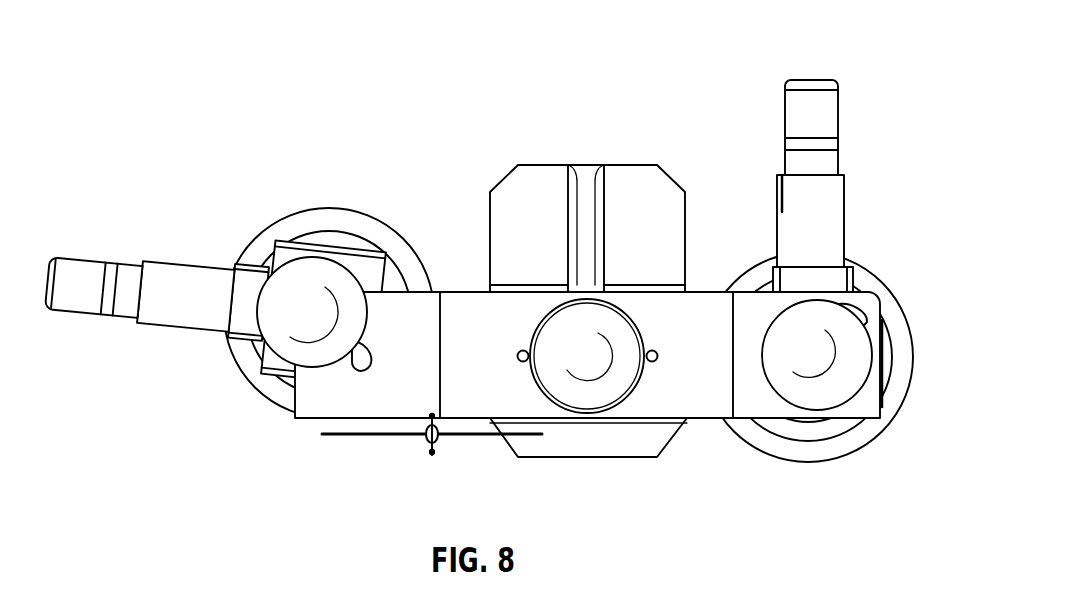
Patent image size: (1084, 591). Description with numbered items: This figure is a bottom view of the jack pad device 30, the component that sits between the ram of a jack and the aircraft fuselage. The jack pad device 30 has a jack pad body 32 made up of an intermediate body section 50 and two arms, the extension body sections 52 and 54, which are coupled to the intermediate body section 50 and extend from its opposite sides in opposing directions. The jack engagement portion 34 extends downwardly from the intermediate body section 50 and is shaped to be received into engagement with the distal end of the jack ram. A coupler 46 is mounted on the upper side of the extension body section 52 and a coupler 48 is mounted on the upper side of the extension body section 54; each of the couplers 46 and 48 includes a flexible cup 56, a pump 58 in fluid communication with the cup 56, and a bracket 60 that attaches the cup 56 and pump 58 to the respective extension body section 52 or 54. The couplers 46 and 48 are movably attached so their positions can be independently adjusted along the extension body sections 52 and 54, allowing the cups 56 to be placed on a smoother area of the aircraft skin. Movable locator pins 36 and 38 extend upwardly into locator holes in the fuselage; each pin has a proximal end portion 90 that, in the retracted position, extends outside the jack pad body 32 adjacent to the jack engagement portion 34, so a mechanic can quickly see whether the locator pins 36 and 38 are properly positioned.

The jack pad device 30 is at (750, 55).
The jack pad body 32 is at (690, 410).
The jack engagement portion 34 is at (548, 372).
The movable locator pin 36 is at (522, 350).
The movable locator pin 38 is at (655, 348).
The coupler 46 is at (317, 217).
The coupler 48 is at (878, 288).
The intermediate body section 50 is at (545, 412).
The extension body section 52 is at (307, 410).
The extension body section 54 is at (867, 410).
The cup 56 is at (250, 367).
The pump 58 is at (127, 277).
The bracket 60 is at (265, 362).
The proximal end portion 90 is at (518, 356).